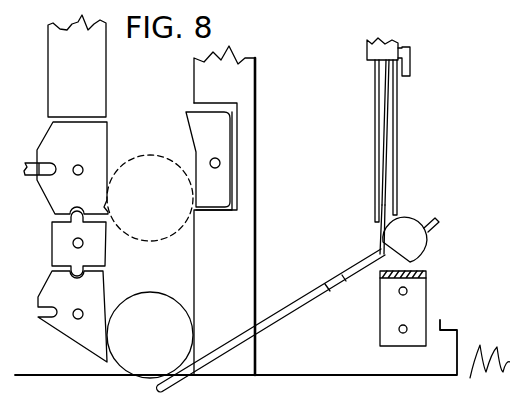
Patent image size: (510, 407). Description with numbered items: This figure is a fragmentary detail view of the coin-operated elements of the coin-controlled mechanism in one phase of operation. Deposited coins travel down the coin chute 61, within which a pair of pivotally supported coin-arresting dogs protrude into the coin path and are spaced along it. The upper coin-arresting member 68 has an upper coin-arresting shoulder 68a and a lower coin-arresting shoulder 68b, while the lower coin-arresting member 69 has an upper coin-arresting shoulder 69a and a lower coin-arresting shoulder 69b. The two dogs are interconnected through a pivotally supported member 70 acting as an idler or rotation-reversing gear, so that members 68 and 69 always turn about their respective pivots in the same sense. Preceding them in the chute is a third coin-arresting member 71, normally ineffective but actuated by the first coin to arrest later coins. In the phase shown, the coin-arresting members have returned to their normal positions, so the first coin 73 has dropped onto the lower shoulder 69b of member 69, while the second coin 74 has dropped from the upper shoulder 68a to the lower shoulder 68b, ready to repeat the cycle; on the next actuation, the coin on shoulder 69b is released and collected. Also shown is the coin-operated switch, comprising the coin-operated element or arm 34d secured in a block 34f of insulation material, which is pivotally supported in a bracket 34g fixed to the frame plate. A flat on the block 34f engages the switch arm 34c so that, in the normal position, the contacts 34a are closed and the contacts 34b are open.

The coin chute 61 is at (238, 83).
The coin-arresting member 68 is at (53, 143).
The upper coin-arresting shoulder 68a is at (105, 129).
The lower coin-arresting shoulder 68b is at (104, 209).
The coin-arresting member 69 is at (58, 297).
The upper coin-arresting shoulder 69a is at (105, 276).
The lower coin-arresting shoulder 69b is at (105, 357).
The pivotally supported member 70 is at (62, 250).
The third coin-arresting member 71 is at (212, 138).
The first coin 73 is at (163, 312).
The second coin 74 is at (167, 173).
The contacts 34a is at (383, 230).
The contacts 34b is at (377, 195).
The switch arm 34c is at (388, 140).
The coin-operated element 34d is at (287, 312).
The block of insulation material 34f is at (405, 237).
The bracket 34g is at (414, 297).